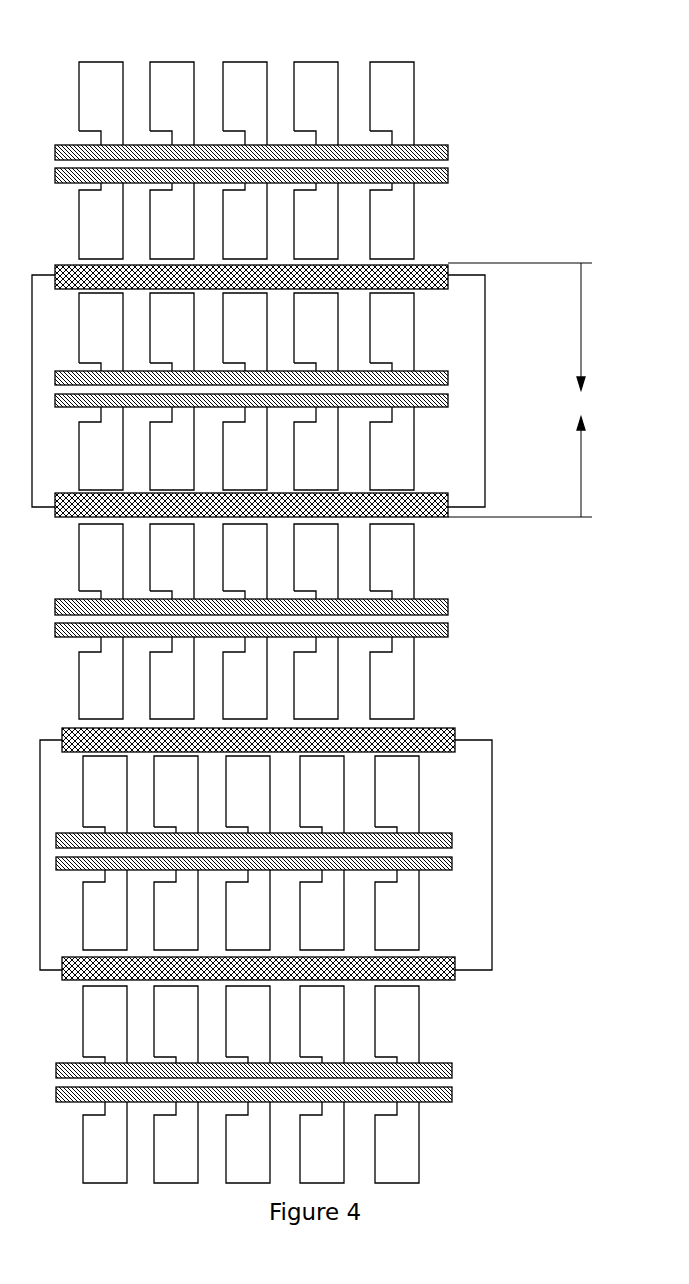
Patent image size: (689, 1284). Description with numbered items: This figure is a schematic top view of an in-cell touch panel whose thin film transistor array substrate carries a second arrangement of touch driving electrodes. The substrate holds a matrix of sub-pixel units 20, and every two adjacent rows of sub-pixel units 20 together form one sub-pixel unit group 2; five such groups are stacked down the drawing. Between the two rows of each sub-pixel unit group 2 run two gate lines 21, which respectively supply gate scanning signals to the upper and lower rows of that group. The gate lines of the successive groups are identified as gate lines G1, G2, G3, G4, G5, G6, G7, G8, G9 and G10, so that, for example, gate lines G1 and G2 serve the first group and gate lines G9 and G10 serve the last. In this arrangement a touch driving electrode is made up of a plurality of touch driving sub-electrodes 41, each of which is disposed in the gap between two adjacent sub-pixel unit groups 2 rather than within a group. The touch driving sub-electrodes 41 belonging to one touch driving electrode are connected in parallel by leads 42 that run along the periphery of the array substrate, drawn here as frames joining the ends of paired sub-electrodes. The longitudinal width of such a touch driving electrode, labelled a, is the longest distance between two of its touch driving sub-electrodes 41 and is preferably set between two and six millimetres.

The sub-pixel unit group 2 is at (78, 60).
The sub-pixel unit 20 is at (392, 82).
The gate line 21 is at (267, 190).
The touch driving sub-electrode 41 is at (437, 283).
The lead 42 is at (485, 375).
The longitudinal width of the touch driving electrode a is at (520, 390).
The gate line G1 is at (265, 152).
The gate line G2 is at (265, 176).
The gate line G3 is at (264, 376).
The gate line G4 is at (264, 401).
The gate line G5 is at (265, 608).
The gate line G6 is at (265, 631).
The gate line G7 is at (268, 841).
The gate line G8 is at (268, 864).
The gate line G9 is at (268, 1069).
The gate line G10 is at (274, 1092).